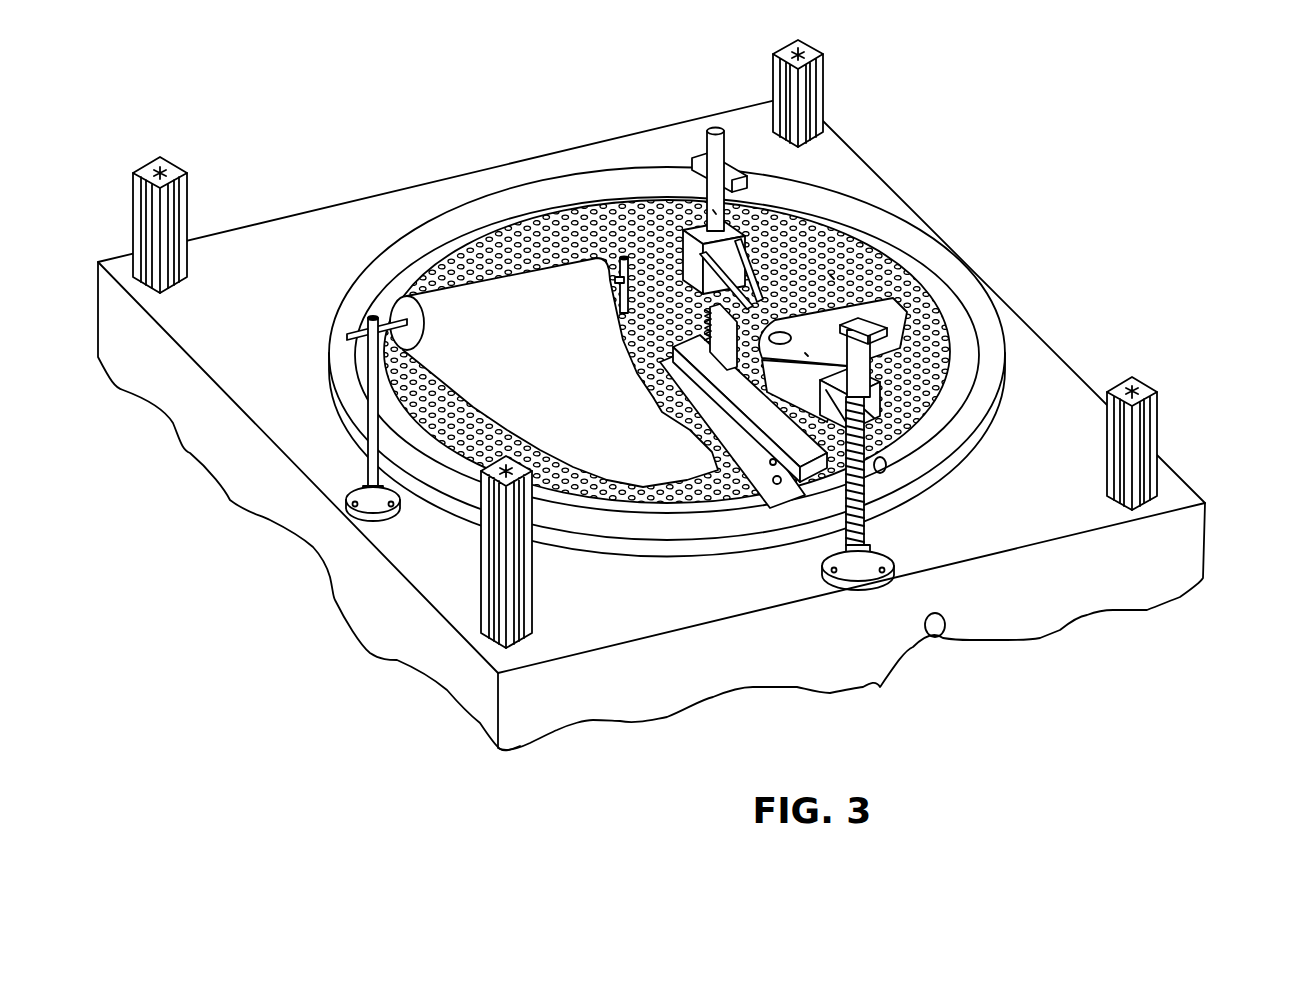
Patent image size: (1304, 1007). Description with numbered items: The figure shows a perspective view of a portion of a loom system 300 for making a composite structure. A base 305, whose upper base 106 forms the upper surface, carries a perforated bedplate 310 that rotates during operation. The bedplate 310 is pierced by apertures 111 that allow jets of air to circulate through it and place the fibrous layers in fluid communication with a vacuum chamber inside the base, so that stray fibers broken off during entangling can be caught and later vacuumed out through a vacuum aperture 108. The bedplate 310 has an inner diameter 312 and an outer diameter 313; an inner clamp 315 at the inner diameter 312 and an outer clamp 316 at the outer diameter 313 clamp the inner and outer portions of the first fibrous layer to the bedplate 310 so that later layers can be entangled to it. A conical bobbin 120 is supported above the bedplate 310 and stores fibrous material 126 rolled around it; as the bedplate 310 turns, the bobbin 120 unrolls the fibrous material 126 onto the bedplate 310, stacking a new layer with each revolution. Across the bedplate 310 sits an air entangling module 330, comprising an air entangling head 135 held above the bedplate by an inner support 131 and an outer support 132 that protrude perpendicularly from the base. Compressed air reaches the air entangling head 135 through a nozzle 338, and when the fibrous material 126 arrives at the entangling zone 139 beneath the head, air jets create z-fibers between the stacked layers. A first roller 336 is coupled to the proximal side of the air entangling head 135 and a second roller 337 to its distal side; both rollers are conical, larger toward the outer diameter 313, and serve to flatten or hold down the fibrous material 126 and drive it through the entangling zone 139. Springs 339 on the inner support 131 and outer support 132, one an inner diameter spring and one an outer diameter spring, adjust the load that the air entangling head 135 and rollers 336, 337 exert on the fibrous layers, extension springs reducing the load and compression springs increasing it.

The loom system 300 is at (250, 152).
The perforated disc 305 is at (667, 311).
The bedplate 310 is at (450, 241).
The inner diameter 312 is at (662, 263).
The outer diameter 313 is at (723, 296).
The inner clamp 315 is at (620, 307).
The outer clamp 316 is at (527, 217).
The bobbin 120 is at (430, 268).
The inner support 131 is at (713, 212).
The apertures 111 is at (835, 275).
The nozzle 338 is at (865, 332).
The air entangling module 330 is at (900, 418).
The second roller 337 is at (886, 462).
The springs 339 is at (707, 320).
The outer support 132 is at (880, 528).
The upper base 106 is at (1173, 552).
The vacuum aperture 108 is at (940, 637).
The fibrous material 126 is at (690, 482).
The entangling zone 139 is at (733, 490).
The first roller 336 is at (758, 482).
The air entangling head 135 is at (810, 482).